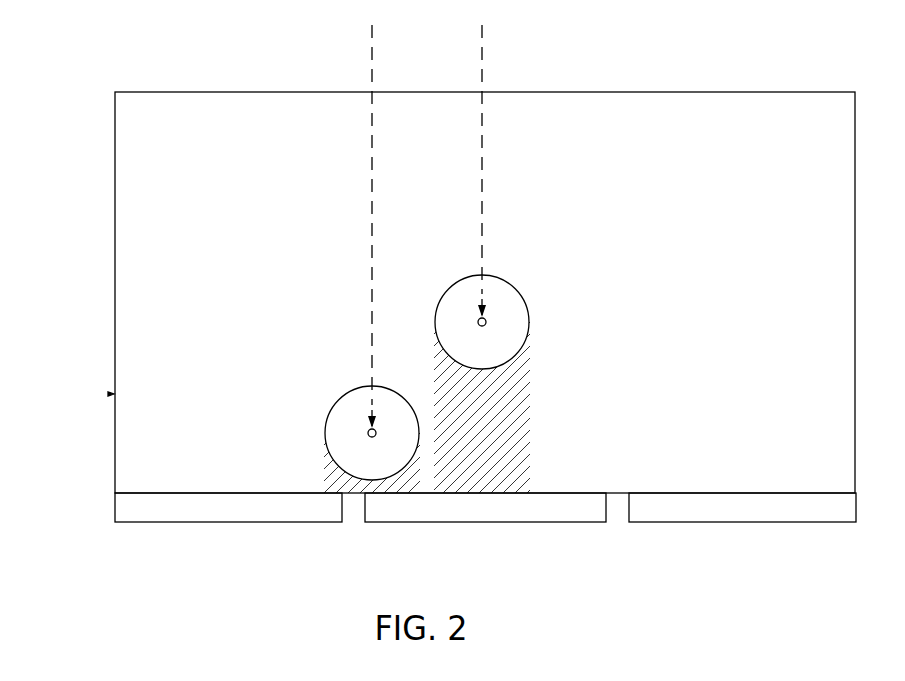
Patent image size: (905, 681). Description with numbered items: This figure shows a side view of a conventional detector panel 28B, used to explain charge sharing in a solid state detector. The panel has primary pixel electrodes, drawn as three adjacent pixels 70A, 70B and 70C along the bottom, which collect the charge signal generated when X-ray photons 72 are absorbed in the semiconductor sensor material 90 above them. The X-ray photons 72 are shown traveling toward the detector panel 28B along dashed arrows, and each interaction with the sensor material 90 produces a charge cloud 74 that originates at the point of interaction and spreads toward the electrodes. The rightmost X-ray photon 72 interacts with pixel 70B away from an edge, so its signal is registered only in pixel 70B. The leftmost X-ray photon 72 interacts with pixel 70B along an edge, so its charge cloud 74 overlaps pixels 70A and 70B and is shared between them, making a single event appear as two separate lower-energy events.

The semiconductor sensor material 90 is at (748, 112).
The conventional detector panel 28B is at (114, 394).
The pixel 70A is at (258, 525).
The pixel 70B is at (420, 525).
The pixel 70C is at (687, 525).
The X-ray photon 72 is at (491, 317).
The charge cloud 74 is at (331, 414).